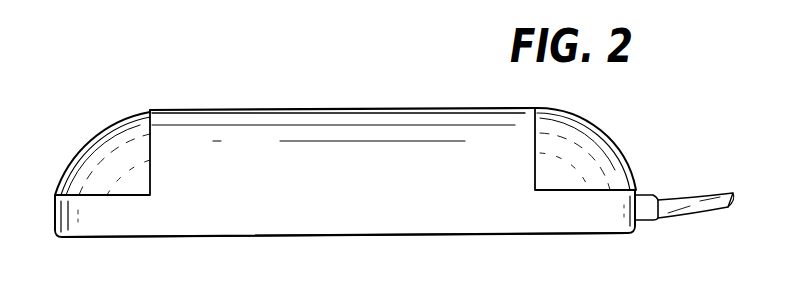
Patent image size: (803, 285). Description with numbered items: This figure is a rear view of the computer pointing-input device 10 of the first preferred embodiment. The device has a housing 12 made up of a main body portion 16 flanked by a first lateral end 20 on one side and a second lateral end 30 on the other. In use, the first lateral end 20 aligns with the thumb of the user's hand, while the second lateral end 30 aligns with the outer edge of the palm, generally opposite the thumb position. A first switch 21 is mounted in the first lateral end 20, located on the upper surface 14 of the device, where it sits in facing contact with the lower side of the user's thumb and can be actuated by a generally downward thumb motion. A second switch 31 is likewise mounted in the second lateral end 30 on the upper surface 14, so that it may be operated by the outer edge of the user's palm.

The computer pointing-input device 10 is at (620, 130).
The housing 12 is at (288, 240).
The upper surface 14 is at (452, 107).
The main body portion 16 is at (378, 196).
The first lateral end 20 is at (120, 242).
The first switch 21 is at (105, 145).
The second lateral end 30 is at (598, 237).
The second switch 31 is at (558, 130).